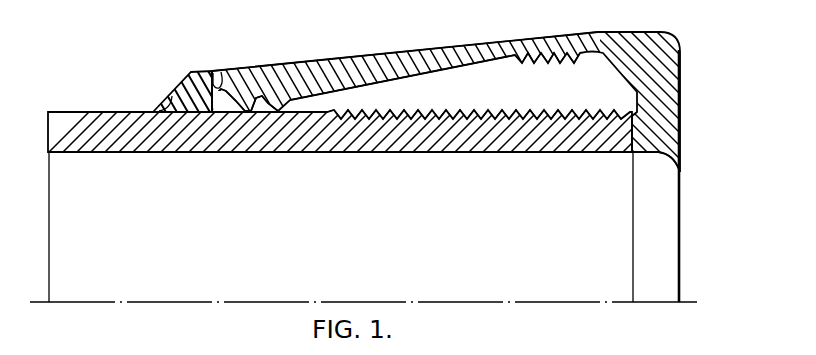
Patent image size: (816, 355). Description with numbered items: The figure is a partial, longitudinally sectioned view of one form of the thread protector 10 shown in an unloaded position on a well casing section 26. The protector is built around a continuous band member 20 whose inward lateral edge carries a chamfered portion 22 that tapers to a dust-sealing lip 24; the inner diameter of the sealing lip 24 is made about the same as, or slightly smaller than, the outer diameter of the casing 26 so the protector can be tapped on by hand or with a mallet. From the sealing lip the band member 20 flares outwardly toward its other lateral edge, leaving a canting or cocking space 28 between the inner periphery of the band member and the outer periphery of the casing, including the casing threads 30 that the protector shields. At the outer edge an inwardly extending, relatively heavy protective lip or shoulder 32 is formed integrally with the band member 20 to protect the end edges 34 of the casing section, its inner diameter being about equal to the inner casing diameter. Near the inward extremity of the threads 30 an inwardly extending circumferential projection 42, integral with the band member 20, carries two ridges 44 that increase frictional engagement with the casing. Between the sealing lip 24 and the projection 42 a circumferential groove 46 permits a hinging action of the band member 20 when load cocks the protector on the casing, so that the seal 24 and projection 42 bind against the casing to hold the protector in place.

The closure cap 10 is at (377, 43).
The band member 20 is at (322, 60).
The chamfered portion 22 is at (173, 87).
The dust-sealing lip 24 is at (170, 104).
The well casing section 26 is at (113, 145).
The canting or cocking space 28 is at (492, 72).
The casing threads 30 is at (432, 110).
The protective lip or shoulder 32 is at (683, 172).
The end edges of the casing section 34 is at (633, 258).
The circumferential projection 42 is at (250, 82).
The ridges 44 is at (262, 100).
The circumferential groove 46 is at (214, 73).